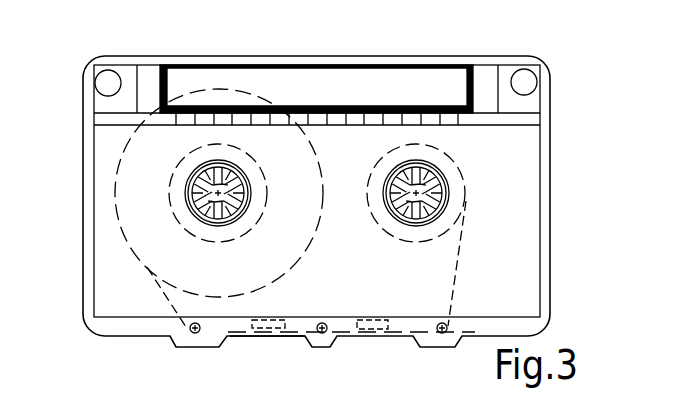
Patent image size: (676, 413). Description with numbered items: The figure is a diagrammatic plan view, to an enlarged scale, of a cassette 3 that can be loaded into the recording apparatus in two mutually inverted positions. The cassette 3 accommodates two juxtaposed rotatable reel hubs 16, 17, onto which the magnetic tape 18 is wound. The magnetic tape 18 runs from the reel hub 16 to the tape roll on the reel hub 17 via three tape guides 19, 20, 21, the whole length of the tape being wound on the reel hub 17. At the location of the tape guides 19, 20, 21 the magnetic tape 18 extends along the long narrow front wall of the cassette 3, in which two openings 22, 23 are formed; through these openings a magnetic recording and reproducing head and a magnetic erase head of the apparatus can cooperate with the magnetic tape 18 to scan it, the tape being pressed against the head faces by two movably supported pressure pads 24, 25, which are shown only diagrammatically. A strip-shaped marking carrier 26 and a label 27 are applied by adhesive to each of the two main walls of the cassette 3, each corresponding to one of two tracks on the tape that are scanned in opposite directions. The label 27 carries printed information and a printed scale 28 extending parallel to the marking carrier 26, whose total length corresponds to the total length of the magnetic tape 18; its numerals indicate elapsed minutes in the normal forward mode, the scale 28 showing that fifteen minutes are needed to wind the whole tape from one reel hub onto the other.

The cassette 3 is at (560, 70).
The reel hub 16 is at (376, 220).
The reel hub 17 is at (260, 213).
The magnetic tape 18 is at (459, 272).
The tape guide 19 is at (442, 333).
The tape guide 20 is at (322, 333).
The tape guide 21 is at (194, 333).
The opening 22 is at (398, 340).
The opening 23 is at (280, 338).
The pressure pad 24 is at (363, 318).
The pressure pad 25 is at (268, 318).
The marking carrier 26 is at (365, 70).
The label 27 is at (535, 190).
The scale 28 is at (320, 120).